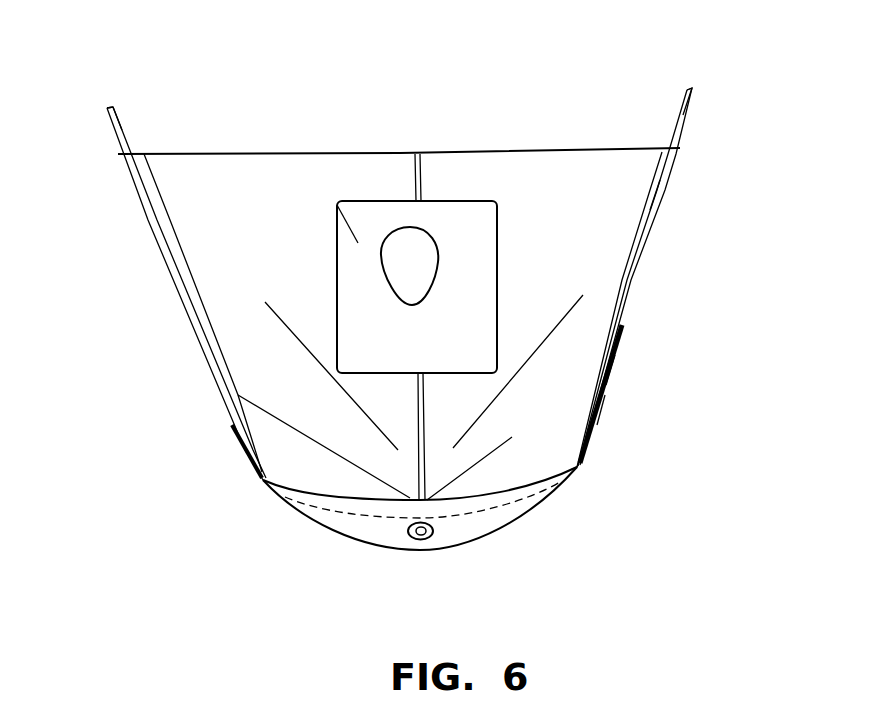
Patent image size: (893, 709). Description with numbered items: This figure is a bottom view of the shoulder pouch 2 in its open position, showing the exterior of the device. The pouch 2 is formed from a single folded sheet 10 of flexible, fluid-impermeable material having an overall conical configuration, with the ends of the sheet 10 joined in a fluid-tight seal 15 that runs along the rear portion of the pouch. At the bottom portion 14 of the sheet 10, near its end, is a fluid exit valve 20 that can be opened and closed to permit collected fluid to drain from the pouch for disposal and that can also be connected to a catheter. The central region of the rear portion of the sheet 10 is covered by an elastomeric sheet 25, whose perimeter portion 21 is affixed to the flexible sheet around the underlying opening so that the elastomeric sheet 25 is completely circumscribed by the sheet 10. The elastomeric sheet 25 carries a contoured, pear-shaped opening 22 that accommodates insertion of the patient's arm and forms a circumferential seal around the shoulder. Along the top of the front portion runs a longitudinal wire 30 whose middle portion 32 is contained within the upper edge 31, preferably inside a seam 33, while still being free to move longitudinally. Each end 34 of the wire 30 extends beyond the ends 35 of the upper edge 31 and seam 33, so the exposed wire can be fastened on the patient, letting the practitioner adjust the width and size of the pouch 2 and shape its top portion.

The shoulder pouch 2 is at (572, 128).
The folded sheet 10 is at (620, 172).
The bottom portion 14 is at (512, 465).
The fluid-tight seal 15 is at (412, 176).
The fluid exit valve 20 is at (432, 526).
The perimeter portion of the elastomeric sheet 21 is at (480, 325).
The contoured opening 22 is at (418, 259).
The elastomeric sheet 25 is at (336, 200).
The longitudinal wire 30 is at (600, 408).
The upper edge 31 is at (607, 375).
The middle portion of the wire 32 is at (582, 458).
The seam 33 is at (650, 192).
The wire ends 34 is at (115, 108).
The ends of the upper edge 35 is at (130, 153).